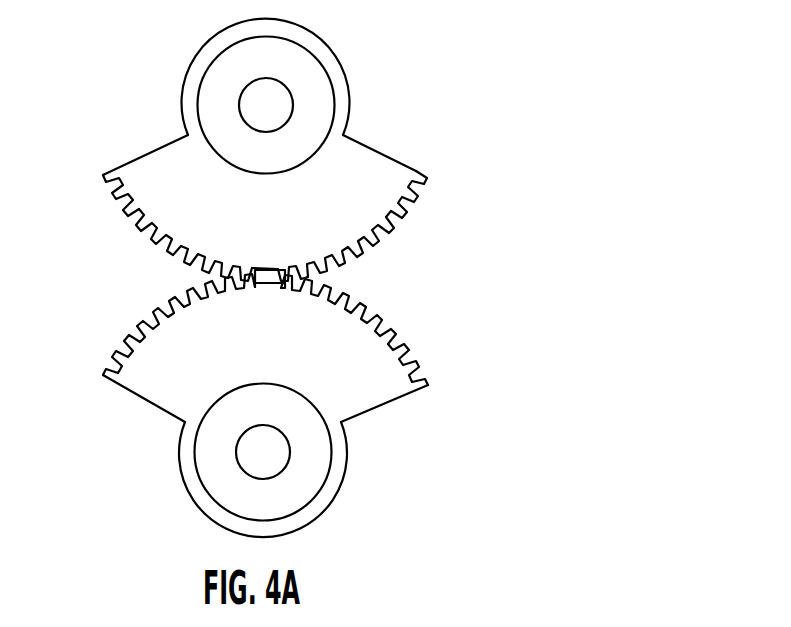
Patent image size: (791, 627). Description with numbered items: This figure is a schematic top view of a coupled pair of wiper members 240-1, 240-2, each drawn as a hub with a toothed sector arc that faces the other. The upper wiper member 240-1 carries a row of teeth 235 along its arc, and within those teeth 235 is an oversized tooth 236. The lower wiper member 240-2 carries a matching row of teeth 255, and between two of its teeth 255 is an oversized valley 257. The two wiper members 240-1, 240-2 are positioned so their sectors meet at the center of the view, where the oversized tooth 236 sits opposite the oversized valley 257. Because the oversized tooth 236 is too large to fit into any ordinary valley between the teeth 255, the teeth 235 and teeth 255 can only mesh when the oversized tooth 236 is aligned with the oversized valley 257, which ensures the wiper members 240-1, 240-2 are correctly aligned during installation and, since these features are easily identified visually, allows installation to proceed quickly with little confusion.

The wiper member 240-1 is at (263, 173).
The wiper member 240-2 is at (284, 403).
The teeth 235 is at (380, 240).
The teeth 255 is at (400, 345).
The oversized tooth 236 is at (262, 273).
The oversized valley 257 is at (262, 288).